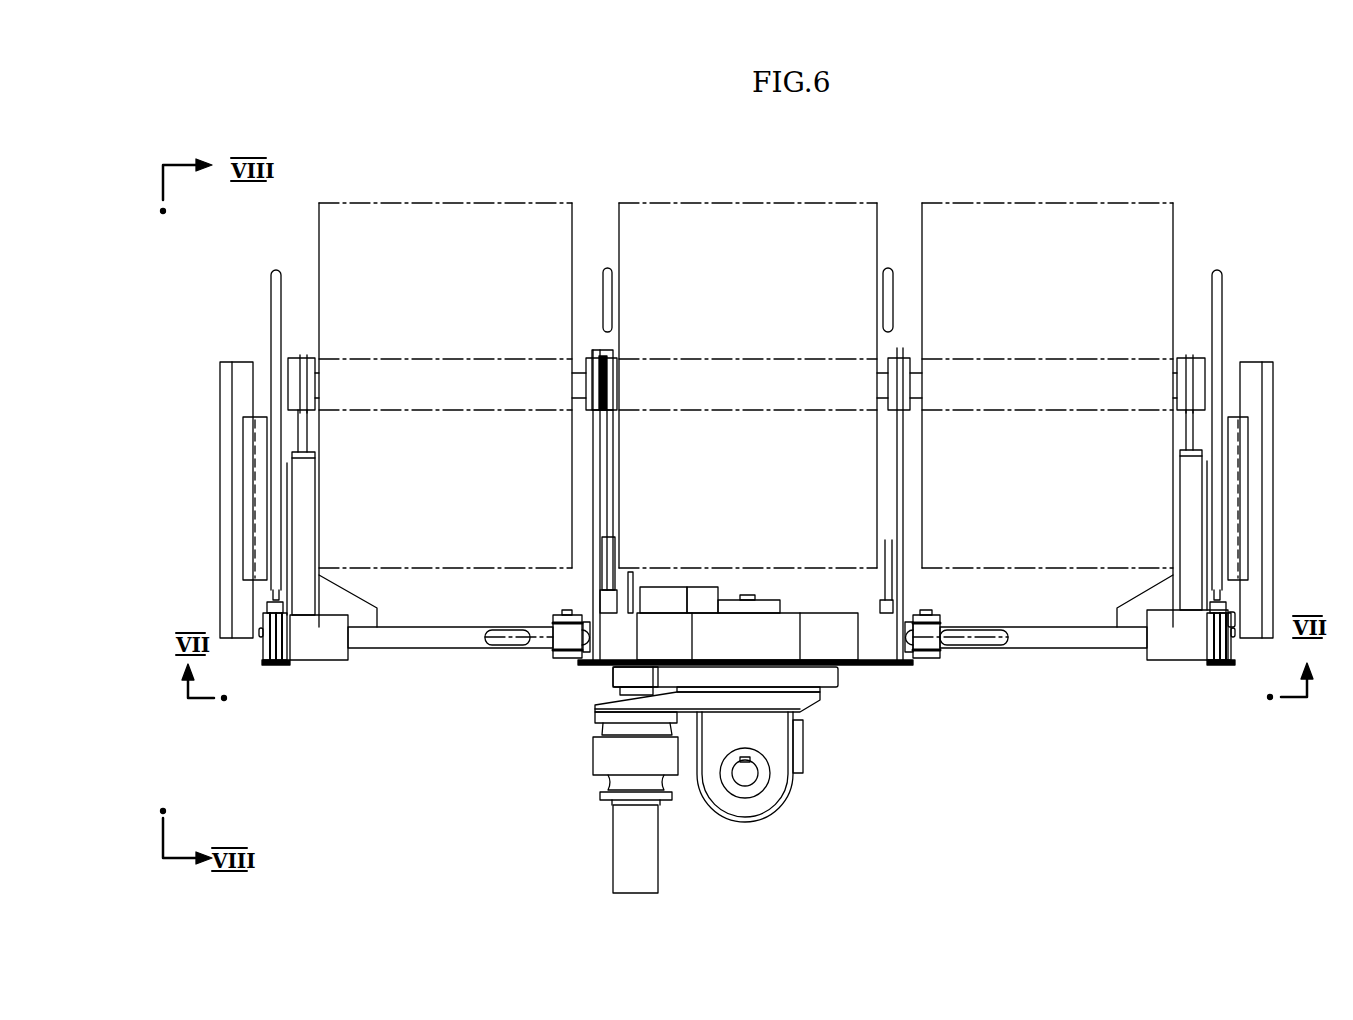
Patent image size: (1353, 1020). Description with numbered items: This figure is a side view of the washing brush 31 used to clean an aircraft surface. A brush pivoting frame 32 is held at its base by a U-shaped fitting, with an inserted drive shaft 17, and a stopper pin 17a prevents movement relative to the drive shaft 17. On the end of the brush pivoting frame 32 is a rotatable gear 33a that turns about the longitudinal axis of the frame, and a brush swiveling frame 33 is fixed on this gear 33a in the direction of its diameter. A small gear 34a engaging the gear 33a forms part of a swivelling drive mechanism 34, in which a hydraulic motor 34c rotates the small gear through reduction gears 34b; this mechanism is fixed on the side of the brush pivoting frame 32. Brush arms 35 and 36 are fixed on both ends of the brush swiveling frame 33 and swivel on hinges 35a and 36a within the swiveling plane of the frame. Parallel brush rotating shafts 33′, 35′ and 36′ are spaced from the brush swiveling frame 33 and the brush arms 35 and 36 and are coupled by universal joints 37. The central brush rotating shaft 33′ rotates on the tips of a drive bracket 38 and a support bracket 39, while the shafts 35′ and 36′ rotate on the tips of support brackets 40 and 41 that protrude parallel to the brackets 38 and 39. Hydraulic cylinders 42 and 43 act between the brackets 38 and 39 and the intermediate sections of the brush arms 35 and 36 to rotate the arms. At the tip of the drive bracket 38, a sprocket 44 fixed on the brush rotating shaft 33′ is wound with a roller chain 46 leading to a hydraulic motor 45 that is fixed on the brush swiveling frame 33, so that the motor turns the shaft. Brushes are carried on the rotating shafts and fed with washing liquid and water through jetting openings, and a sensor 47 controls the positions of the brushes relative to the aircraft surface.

The washing brush 31 is at (1160, 192).
The brush pivoting frame 32 is at (800, 775).
The brush swiveling frame 33 is at (790, 613).
The brush rotating shaft 33′ is at (740, 410).
The gear 33a is at (842, 672).
The swivelling drive mechanism 34 is at (565, 737).
The small gear 34a is at (612, 677).
The reduction gears 34b is at (590, 763).
The hydraulic motor 34c is at (613, 845).
The brush arm 35 is at (420, 648).
The brush rotating shaft 35′ is at (447, 410).
The hinge 35a is at (565, 612).
The brush arm 36 is at (1060, 648).
The brush rotating shaft 36′ is at (1045, 410).
The hinge 36a is at (928, 610).
The universal joint 37 is at (578, 383).
The drive bracket 38 is at (593, 497).
The support bracket 39 is at (905, 480).
The support bracket 40 is at (305, 475).
The support bracket 41 is at (1190, 518).
The hydraulic cylinder 42 is at (535, 627).
The hydraulic cylinder 43 is at (955, 648).
The sprocket 44 is at (612, 352).
The hydraulic motor 45 is at (665, 587).
The roller chain 46 is at (613, 458).
The sensor 47 is at (273, 295).
The drive shaft 17 is at (742, 783).
The stopper pin 17a is at (757, 783).